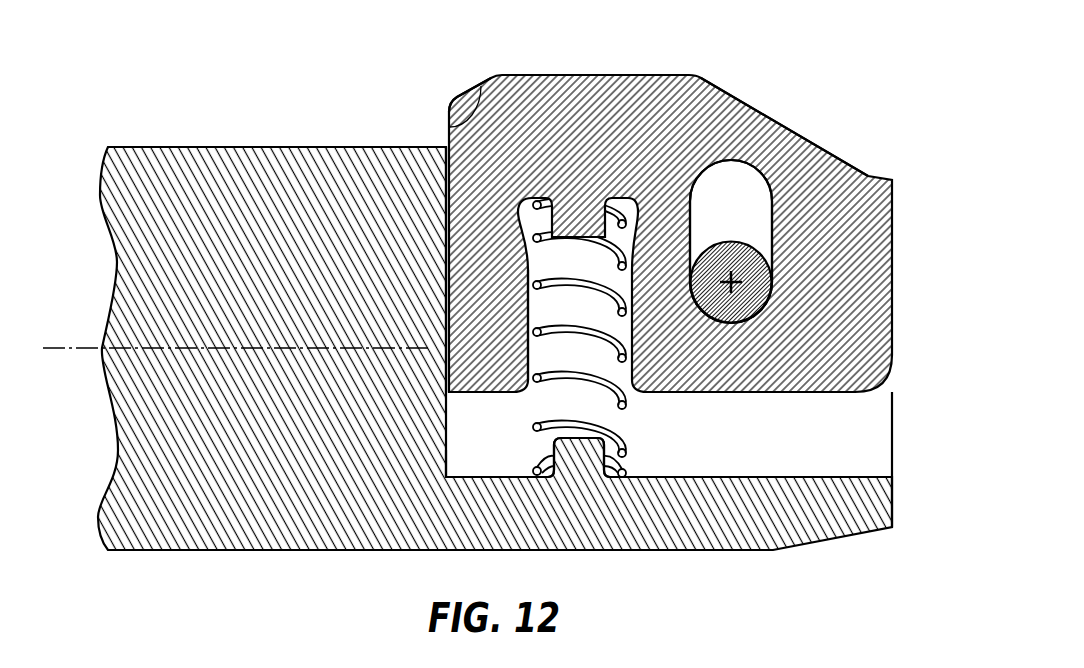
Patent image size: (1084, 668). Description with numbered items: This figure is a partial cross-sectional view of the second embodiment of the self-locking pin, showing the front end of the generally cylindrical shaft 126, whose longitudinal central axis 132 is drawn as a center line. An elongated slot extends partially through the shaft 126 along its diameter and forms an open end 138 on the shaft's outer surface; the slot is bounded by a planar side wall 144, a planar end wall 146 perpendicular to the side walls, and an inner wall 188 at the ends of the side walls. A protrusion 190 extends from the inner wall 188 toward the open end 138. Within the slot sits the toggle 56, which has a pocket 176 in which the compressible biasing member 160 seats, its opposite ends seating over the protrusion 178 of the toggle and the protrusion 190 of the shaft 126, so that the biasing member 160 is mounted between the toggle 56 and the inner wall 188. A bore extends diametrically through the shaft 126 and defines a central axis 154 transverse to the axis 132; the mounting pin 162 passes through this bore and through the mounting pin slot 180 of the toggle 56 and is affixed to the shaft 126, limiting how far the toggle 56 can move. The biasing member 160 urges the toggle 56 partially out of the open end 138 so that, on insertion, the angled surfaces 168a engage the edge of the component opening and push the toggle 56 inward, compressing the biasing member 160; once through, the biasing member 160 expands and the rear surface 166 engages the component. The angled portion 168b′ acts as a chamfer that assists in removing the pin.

The shaft 126 is at (233, 505).
The longitudinal central axis 132 is at (87, 350).
The biasing member 160 is at (578, 375).
The valve member 56 is at (781, 118).
The mounting pin 162 is at (745, 302).
The central axis 154 is at (733, 280).
The mounting pin slot 180 is at (772, 213).
The protrusion 178 is at (592, 225).
The pocket 176 is at (556, 245).
The open end 138 is at (447, 148).
The rear surface 166 is at (479, 92).
The angled portion 168b′ is at (461, 99).
The angled surfaces 168a is at (828, 147).
The second planar side wall 144 is at (852, 433).
The planar end wall 146 is at (446, 449).
The inner wall 188 is at (756, 477).
The protrusion 190 is at (587, 452).